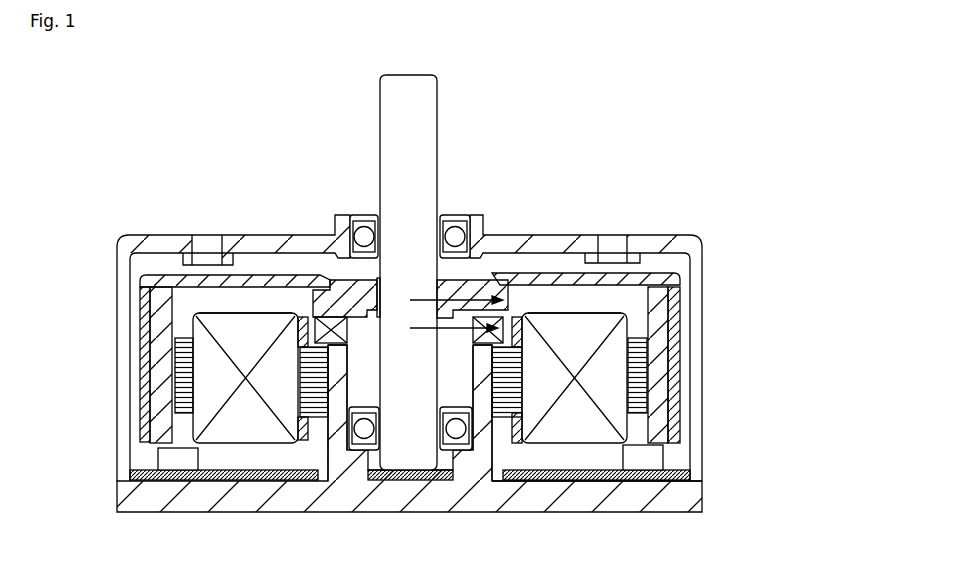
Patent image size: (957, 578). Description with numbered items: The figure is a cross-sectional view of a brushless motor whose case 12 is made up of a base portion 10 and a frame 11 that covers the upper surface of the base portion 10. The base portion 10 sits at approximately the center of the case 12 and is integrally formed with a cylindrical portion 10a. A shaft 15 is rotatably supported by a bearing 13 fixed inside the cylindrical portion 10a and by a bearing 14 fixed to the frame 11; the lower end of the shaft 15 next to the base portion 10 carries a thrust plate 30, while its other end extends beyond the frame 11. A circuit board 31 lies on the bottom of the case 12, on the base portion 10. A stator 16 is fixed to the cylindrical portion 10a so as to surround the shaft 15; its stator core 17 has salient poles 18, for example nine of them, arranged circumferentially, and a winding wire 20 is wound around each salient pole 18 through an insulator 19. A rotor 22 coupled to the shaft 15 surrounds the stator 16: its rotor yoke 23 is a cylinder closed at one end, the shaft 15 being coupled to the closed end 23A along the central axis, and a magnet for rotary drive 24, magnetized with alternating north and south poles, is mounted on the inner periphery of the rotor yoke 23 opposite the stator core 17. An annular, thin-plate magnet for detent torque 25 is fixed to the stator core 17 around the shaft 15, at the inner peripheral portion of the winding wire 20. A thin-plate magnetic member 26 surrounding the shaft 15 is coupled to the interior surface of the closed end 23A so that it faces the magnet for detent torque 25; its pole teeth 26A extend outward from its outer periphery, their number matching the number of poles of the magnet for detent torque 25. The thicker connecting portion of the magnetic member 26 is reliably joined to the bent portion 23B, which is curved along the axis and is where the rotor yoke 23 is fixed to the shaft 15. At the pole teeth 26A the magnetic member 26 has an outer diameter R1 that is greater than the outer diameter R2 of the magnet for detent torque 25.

The base portion 10 is at (627, 498).
The cylindrical portion 10a is at (500, 480).
The frame 11 is at (583, 235).
The case 12 is at (466, 349).
The bearing 13 is at (483, 433).
The bearing 14 is at (348, 218).
The shaft 15 is at (400, 440).
The stator 16 is at (495, 370).
The stator core 17 is at (650, 402).
The salient poles 18 is at (643, 370).
The insulator 19 is at (630, 338).
The winding wire 20 is at (600, 317).
The rotor 22 is at (401, 272).
The rotor yoke 23 is at (376, 305).
The closed end 23A is at (267, 277).
The bent portion 23B is at (383, 302).
The magnet for rotary drive 24 is at (167, 368).
The magnet for detent torque 25 is at (317, 318).
The magnetic member 26 is at (322, 290).
The pole teeth 26A is at (492, 287).
The thrust plate 30 is at (415, 481).
The circuit board 31 is at (232, 482).
The outer diameter of magnetic member at pole tooth section R1 is at (483, 288).
The outer diameter of magnet for detent torque R2 is at (458, 335).